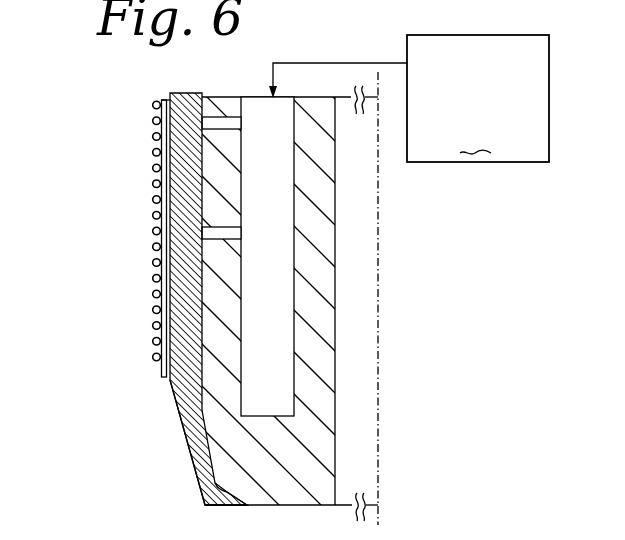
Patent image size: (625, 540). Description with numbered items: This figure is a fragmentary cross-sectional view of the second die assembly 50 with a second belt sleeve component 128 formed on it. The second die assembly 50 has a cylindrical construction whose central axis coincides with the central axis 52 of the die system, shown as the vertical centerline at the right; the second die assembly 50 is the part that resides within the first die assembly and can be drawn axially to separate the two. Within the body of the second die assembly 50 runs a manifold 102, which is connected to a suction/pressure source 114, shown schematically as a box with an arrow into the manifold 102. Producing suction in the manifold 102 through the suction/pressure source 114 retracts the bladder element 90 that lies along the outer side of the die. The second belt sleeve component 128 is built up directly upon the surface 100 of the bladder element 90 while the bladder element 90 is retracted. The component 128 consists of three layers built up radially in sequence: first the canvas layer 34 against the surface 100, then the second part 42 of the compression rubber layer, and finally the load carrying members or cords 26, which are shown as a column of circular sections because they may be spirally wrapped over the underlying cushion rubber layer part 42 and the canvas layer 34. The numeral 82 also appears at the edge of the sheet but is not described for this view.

The load carrying cord 26 is at (153, 103).
The canvas layer 34 is at (168, 130).
The second part of the compression rubber layer 42 is at (163, 100).
The second die assembly 50 is at (341, 268).
The central axis 52 is at (380, 398).
The element 82 is at (28, 26).
The bladder element 90 is at (177, 425).
The surface of the bladder element 100 is at (200, 256).
The manifold 102 is at (273, 243).
The suction/pressure source 114 is at (409, 98).
The second belt sleeve component 128 is at (153, 368).